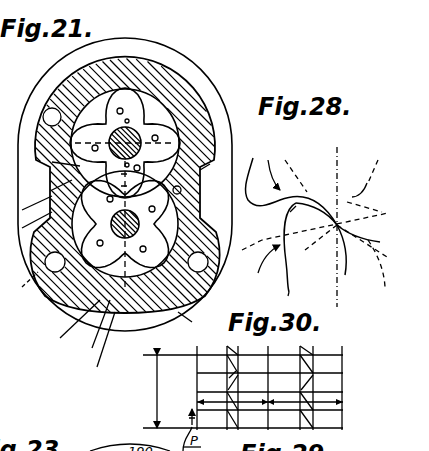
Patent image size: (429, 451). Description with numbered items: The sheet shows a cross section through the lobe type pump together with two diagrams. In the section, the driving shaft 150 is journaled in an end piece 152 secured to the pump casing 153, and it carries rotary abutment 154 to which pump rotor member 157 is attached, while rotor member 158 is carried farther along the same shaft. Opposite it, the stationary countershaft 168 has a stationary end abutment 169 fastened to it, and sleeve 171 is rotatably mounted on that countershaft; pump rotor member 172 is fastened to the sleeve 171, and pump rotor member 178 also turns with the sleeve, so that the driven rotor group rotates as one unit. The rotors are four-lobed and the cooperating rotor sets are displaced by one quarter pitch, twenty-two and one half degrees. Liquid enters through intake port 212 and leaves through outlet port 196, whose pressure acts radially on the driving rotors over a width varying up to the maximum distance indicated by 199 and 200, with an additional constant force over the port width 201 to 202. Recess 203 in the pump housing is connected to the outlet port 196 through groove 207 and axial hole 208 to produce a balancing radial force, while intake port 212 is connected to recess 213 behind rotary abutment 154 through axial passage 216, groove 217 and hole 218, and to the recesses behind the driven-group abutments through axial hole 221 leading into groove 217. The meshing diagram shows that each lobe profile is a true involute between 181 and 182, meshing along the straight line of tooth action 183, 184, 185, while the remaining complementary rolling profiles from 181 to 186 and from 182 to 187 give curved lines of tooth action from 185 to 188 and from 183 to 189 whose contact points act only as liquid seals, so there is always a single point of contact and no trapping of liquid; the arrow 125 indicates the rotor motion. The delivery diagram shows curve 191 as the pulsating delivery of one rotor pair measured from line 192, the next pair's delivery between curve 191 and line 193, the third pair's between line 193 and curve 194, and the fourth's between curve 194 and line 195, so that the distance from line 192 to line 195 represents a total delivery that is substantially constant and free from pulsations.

In FIG. 21, the pump rotor member 172 is at (94, 122).
In FIG. 21, the pump casing 153 is at (160, 96).
In FIG. 21, the axial hole 221 is at (54, 116).
In FIG. 21, the hole 218 is at (66, 296).
In FIG. 21, the axial hole 208 is at (220, 270).
In FIG. 21, the sleeve 171 is at (140, 134).
In FIG. 21, the stationary countershaft 168 is at (141, 120).
In FIG. 21, the point of maximum contact distance 199 is at (118, 226).
In FIG. 21, the driving shaft 150 is at (141, 226).
In FIG. 21, the groove 217 is at (148, 62).
In FIG. 21, the stationary end abutment 169 is at (53, 158).
In FIG. 21, the intake port 212 is at (218, 162).
In FIG. 21, the port width reference point 202 is at (49, 190).
In FIG. 21, the axial passage 216 is at (182, 190).
In FIG. 21, the outlet port 196 is at (26, 208).
In FIG. 21, the port width reference point 201 is at (26, 226).
In FIG. 21, the recess 213 is at (20, 286).
In FIG. 21, the point of maximum contact distance 200 is at (67, 325).
In FIG. 21, the pump rotor member 157 is at (90, 330).
In FIG. 21, the rotary abutment 154 is at (96, 346).
In FIG. 21, the recess 203 is at (199, 321).
In FIG. 21, the groove 207 is at (11, 65).
In FIG. 21, the pump rotor member 178 is at (5, 91).
In FIG. 21, the end piece 152 is at (6, 123).
In FIG. 28, the end point of curved line of tooth action 188 is at (335, 197).
In FIG. 28, the end point of involute profile 181 is at (312, 225).
In FIG. 28, the rotation arrow 125 is at (263, 169).
In FIG. 28, the end point of rolling profile 186 is at (281, 213).
In FIG. 28, the point on line of tooth action 185 is at (333, 186).
In FIG. 28, the point on line of tooth action 184 is at (346, 225).
In FIG. 28, the end point of rolling profile 187 is at (352, 242).
In FIG. 28, the point on line of tooth action 183 is at (326, 242).
In FIG. 28, the end point of curved line of tooth action 189 is at (337, 250).
In FIG. 28, the end point of involute profile 182 is at (365, 263).
In FIG. 28, the rotor member 158 is at (291, 292).
In FIG. 30, the line 195 is at (342, 368).
In FIG. 30, the line 193 is at (251, 387).
In FIG. 30, the curve 194 is at (308, 380).
In FIG. 30, the curve 191 is at (233, 380).
In FIG. 30, the line 192 is at (197, 367).